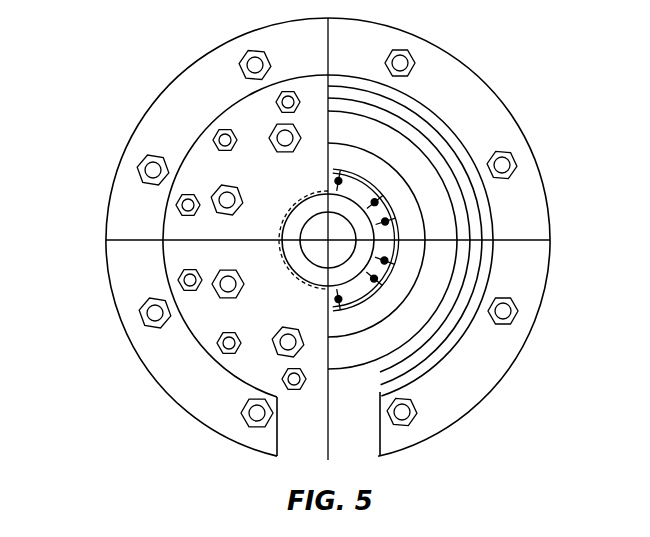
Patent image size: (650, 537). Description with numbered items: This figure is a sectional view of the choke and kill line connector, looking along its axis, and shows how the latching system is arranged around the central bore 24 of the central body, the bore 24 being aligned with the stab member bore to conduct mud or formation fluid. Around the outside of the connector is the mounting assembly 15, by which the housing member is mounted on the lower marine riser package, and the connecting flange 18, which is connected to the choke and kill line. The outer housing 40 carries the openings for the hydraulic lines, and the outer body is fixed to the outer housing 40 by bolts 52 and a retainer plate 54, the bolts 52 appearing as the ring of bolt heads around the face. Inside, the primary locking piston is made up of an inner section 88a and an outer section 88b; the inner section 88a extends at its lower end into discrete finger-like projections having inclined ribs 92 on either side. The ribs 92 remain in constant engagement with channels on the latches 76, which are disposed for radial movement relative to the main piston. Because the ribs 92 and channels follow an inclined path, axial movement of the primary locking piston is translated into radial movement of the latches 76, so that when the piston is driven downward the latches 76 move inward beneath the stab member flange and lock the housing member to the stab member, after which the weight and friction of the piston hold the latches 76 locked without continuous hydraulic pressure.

The mounting assembly 15 is at (299, 239).
The retainer plate 54 is at (328, 201).
The bolts 52 is at (242, 114).
The connecting flange 18 is at (281, 221).
The bore 24 is at (297, 267).
The outer housing 40 is at (405, 228).
The latches 76 is at (389, 191).
The inclined ribs 92 is at (426, 217).
The inner section of the primary locking piston 88a is at (433, 325).
The outer section of the primary locking piston 88b is at (451, 252).